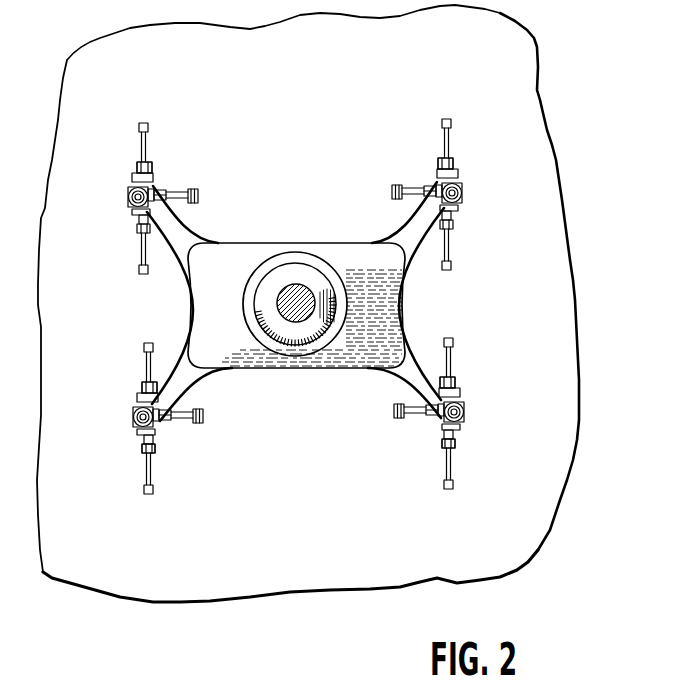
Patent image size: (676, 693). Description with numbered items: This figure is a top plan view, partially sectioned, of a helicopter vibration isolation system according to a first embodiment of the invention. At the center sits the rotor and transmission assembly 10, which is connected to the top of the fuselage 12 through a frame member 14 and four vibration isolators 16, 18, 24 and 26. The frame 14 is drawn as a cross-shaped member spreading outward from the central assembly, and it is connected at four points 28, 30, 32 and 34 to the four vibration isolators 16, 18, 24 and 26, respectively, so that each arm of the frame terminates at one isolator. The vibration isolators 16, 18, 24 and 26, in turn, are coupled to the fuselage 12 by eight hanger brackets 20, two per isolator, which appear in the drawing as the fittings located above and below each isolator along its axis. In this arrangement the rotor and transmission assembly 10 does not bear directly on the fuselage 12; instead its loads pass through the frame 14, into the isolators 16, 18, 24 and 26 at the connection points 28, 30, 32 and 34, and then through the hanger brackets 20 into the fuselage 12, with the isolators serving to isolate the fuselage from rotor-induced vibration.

The rotor and transmission assembly 10 is at (345, 292).
The fuselage 12 is at (556, 274).
The frame member 14 is at (198, 282).
The vibration isolator 16 is at (128, 437).
The vibration isolator 18 is at (468, 434).
The hanger bracket 20 is at (151, 169).
The vibration isolator 24 is at (129, 180).
The vibration isolator 26 is at (465, 178).
The connection point 28 is at (134, 414).
The connection point 30 is at (468, 412).
The connection point 32 is at (128, 203).
The connection point 34 is at (463, 193).